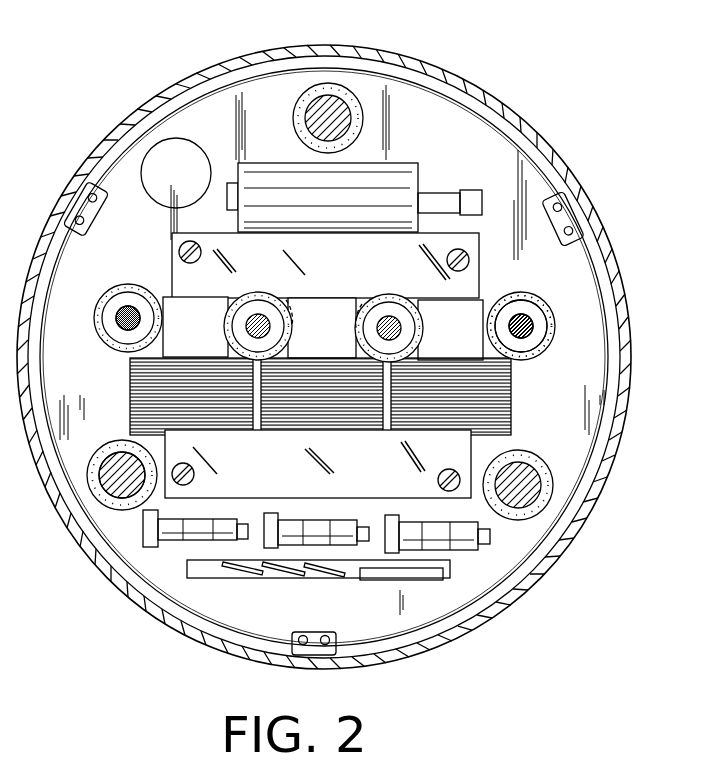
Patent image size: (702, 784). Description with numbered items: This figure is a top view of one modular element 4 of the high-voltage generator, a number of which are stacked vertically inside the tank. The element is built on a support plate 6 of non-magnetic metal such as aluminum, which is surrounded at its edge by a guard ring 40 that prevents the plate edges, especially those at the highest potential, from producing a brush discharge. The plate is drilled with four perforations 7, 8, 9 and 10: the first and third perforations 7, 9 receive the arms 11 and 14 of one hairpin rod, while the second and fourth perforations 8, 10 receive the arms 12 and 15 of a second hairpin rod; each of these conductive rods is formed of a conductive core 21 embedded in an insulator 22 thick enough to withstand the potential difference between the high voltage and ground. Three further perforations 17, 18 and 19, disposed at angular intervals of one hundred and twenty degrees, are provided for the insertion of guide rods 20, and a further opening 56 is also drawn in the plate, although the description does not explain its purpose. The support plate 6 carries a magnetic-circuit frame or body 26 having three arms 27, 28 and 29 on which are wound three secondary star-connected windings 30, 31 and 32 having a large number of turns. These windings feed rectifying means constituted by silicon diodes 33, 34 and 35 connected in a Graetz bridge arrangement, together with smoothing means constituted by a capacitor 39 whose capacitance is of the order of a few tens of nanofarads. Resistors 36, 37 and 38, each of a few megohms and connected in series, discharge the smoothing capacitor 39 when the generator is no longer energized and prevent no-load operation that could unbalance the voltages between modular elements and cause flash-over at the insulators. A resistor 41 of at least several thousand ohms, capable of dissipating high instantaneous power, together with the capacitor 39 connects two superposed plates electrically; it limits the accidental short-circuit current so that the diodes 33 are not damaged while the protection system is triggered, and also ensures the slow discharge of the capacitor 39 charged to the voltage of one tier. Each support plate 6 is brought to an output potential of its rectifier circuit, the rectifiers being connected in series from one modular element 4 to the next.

The modular element 4 is at (236, 72).
The support plate 6 is at (50, 388).
The first perforation 7 is at (122, 298).
The second perforation 8 is at (254, 300).
The third perforation 9 is at (378, 302).
The fourth perforation 10 is at (527, 302).
The arm of hairpin rod 11 is at (98, 322).
The arm of second hairpin rod 12 is at (290, 300).
The arm of hairpin rod 14 is at (397, 302).
The arm of second hairpin rod 15 is at (536, 344).
The perforation for guide rod 17 is at (362, 92).
The perforation for guide rod 18 is at (528, 456).
The perforation for guide rod 19 is at (98, 490).
The guide rod 20 is at (112, 500).
The conductive core 21 is at (545, 316).
The insulator 22 is at (546, 325).
The magnetic-circuit frame 26 is at (185, 266).
The arm of magnetic-circuit frame 27 is at (180, 346).
The arm of magnetic-circuit frame 28 is at (306, 346).
The arm of magnetic-circuit frame 29 is at (436, 346).
The secondary winding 30 is at (135, 401).
The secondary winding 31 is at (318, 432).
The secondary winding 32 is at (410, 424).
The silicon diode 33 is at (184, 518).
The silicon diode 34 is at (318, 526).
The silicon diode 35 is at (418, 530).
The resistor 36 is at (238, 576).
The resistor 37 is at (290, 576).
The resistor 38 is at (336, 578).
The capacitor 39 is at (402, 178).
The guard ring 40 is at (556, 568).
The resistor 41 is at (392, 578).
The aperture 56 is at (176, 147).